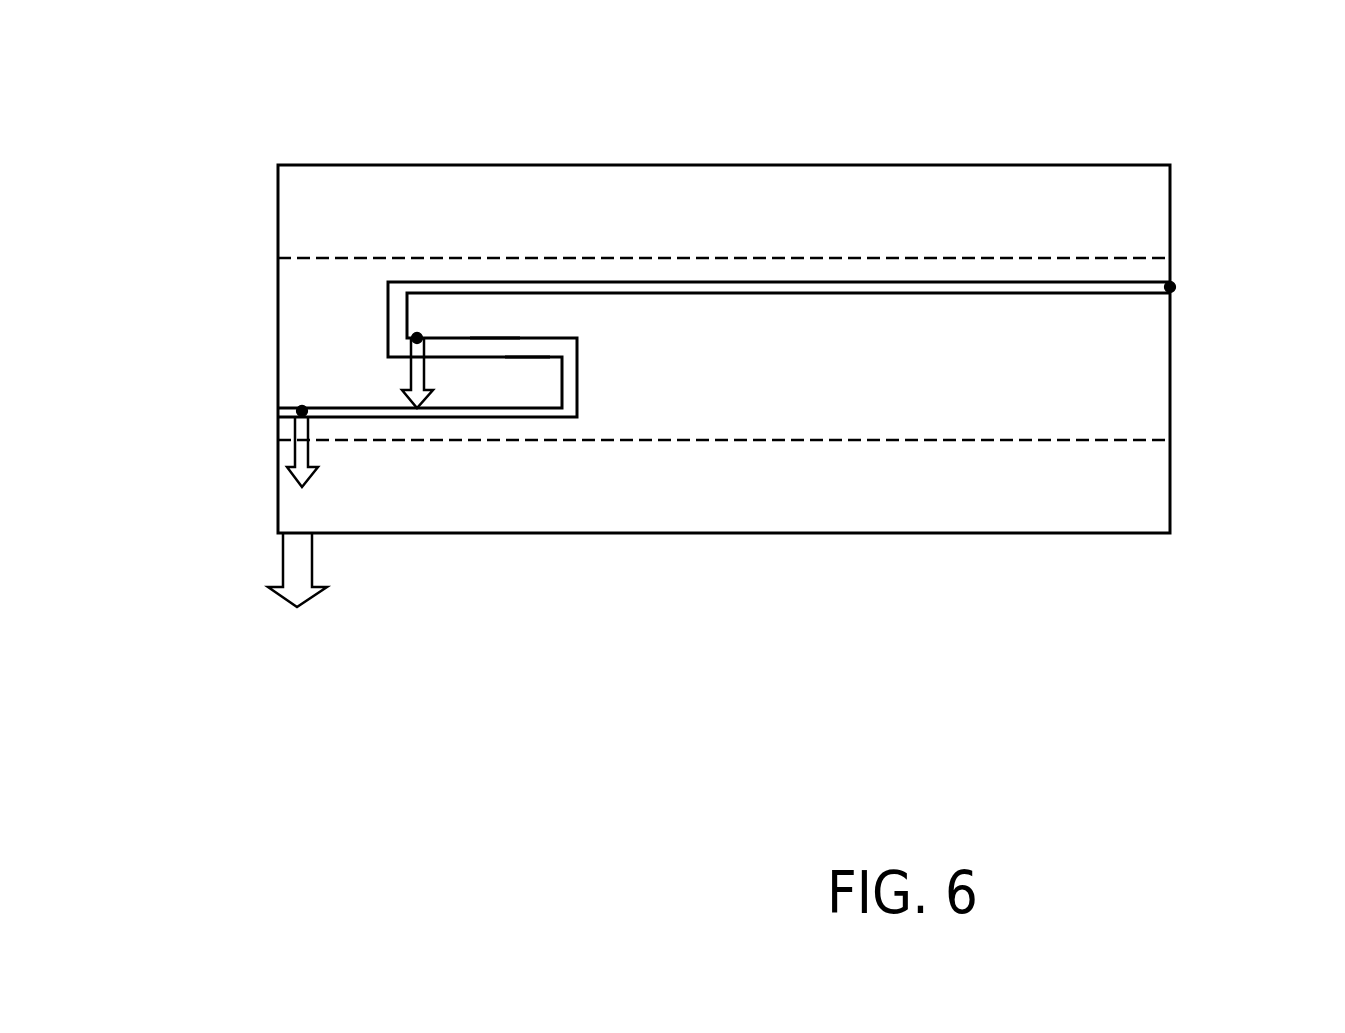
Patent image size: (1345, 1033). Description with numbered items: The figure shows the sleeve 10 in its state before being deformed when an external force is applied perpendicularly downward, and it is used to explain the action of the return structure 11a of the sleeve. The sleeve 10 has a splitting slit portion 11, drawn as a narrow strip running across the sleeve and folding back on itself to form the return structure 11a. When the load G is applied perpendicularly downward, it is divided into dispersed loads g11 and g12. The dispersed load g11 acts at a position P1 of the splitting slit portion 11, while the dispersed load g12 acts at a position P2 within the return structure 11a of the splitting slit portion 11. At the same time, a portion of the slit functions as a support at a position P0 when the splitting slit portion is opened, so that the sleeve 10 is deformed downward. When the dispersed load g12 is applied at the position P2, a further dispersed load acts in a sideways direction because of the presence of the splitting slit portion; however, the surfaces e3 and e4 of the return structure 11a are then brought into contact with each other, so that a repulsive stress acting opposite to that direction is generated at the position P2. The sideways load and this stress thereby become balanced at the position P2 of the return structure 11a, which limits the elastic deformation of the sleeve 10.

The sleeve 10 is at (558, 165).
The splitting slit portion 11 is at (987, 283).
The return structure 11a is at (632, 412).
The surface e3 is at (495, 338).
The surface e4 is at (528, 357).
The position P0 is at (1175, 287).
The position P1 is at (302, 411).
The position P2 is at (417, 338).
The dispersed load g11 is at (309, 455).
The dispersed load g12 is at (427, 375).
The load G is at (297, 594).